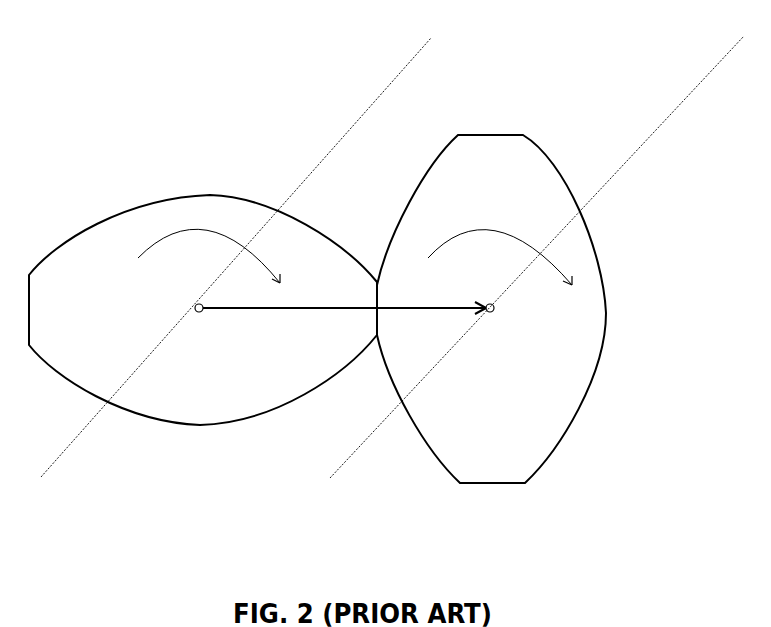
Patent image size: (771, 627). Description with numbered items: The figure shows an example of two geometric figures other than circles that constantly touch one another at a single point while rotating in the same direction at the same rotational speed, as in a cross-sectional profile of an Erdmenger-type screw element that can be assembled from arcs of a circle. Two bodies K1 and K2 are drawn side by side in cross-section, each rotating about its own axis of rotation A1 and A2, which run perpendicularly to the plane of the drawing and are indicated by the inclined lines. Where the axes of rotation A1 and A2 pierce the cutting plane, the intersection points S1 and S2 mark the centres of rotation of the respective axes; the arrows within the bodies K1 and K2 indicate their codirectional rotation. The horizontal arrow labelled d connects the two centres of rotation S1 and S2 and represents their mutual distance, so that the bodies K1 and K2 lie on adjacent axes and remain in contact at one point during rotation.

The first body K1 is at (203, 270).
The second body K2 is at (491, 299).
The centre of rotation S1 is at (210, 330).
The centre of rotation S2 is at (507, 327).
The axis of rotation A1 is at (236, 257).
The axis of rotation A2 is at (537, 263).
The displacement vector between centers d is at (315, 328).